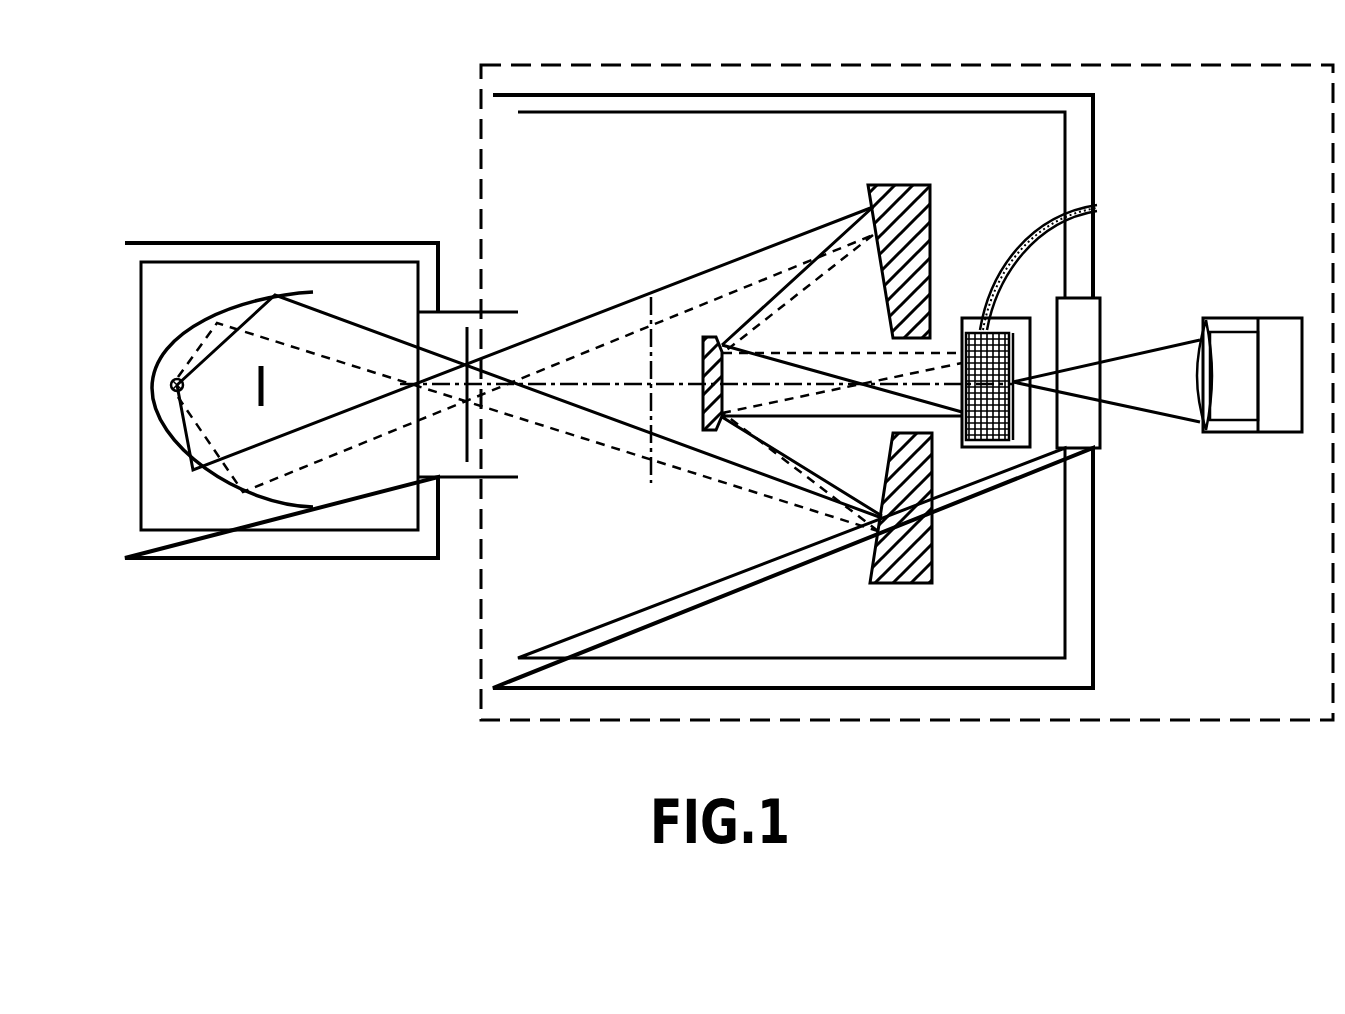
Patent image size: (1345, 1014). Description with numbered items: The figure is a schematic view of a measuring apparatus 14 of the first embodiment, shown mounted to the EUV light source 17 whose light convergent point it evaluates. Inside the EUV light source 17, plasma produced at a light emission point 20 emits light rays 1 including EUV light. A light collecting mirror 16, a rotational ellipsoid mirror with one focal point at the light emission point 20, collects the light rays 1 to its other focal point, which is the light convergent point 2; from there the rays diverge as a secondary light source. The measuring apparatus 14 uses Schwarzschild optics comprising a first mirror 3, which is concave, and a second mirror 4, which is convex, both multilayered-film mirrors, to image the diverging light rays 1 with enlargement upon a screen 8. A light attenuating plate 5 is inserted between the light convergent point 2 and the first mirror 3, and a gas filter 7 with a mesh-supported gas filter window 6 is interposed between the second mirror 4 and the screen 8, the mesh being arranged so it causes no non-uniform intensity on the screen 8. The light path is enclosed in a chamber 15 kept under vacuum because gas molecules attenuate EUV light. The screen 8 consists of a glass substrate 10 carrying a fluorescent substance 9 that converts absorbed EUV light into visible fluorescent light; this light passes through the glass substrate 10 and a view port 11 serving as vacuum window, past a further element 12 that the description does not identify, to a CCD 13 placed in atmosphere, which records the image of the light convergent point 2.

The light rays 1 is at (365, 322).
The light convergent point 2 is at (467, 462).
The first mirror (concave mirror) 3 is at (907, 184).
The second mirror (convex mirror) 4 is at (703, 368).
The light attenuating plate 5 is at (652, 290).
The gas filter window 6 is at (958, 345).
The gas filter 7 is at (973, 327).
The screen 8 is at (1018, 555).
The fluorescent substance 9 is at (993, 443).
The glass substrate 10 is at (1020, 447).
The view port 11 is at (1101, 310).
The exit light beam 12 is at (1157, 347).
The CCD 13 is at (1232, 318).
The measuring apparatus 14 is at (592, 65).
The chamber 15 is at (1095, 158).
The light collecting mirror 16 is at (192, 320).
The EUV light source 17 is at (270, 243).
The light emission point 20 is at (187, 388).